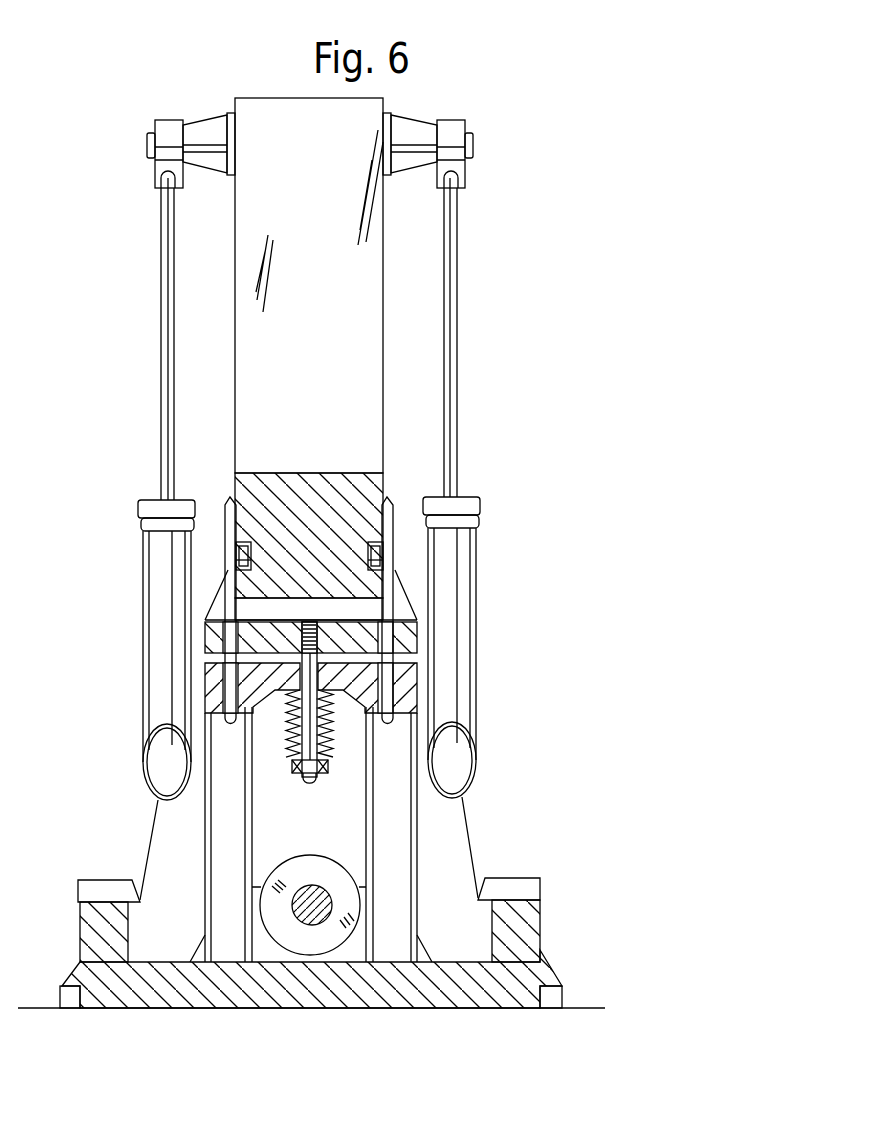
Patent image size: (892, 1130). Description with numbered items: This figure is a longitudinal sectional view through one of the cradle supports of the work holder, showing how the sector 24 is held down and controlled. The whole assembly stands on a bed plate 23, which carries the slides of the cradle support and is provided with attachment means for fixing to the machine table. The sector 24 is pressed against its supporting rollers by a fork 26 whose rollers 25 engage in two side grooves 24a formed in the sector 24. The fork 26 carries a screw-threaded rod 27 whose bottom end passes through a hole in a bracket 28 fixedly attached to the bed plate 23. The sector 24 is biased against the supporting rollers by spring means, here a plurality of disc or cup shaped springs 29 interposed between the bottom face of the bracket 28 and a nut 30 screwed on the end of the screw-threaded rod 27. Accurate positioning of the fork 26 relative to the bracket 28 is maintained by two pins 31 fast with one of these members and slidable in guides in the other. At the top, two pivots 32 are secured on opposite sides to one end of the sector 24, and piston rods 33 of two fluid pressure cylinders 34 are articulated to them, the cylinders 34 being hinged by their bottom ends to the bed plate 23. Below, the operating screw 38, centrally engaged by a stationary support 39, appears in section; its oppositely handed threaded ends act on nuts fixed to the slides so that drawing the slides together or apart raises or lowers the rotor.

The bed plate 23 is at (375, 998).
The sector 24 is at (339, 485).
The side grooves 24a is at (245, 503).
The rollers 25 is at (240, 558).
The fork 26 is at (218, 610).
The screw-threaded rod 27 is at (287, 735).
The bracket 28 is at (345, 678).
The disc or cup shaped springs 29 is at (323, 728).
The nut 30 is at (322, 772).
The pins 31 is at (228, 678).
The pivots 32 is at (200, 130).
The piston rods 33 is at (161, 263).
The fluid pressure cylinders 34 is at (162, 567).
The operating screw 38 is at (318, 887).
The stationary support 39 is at (292, 878).